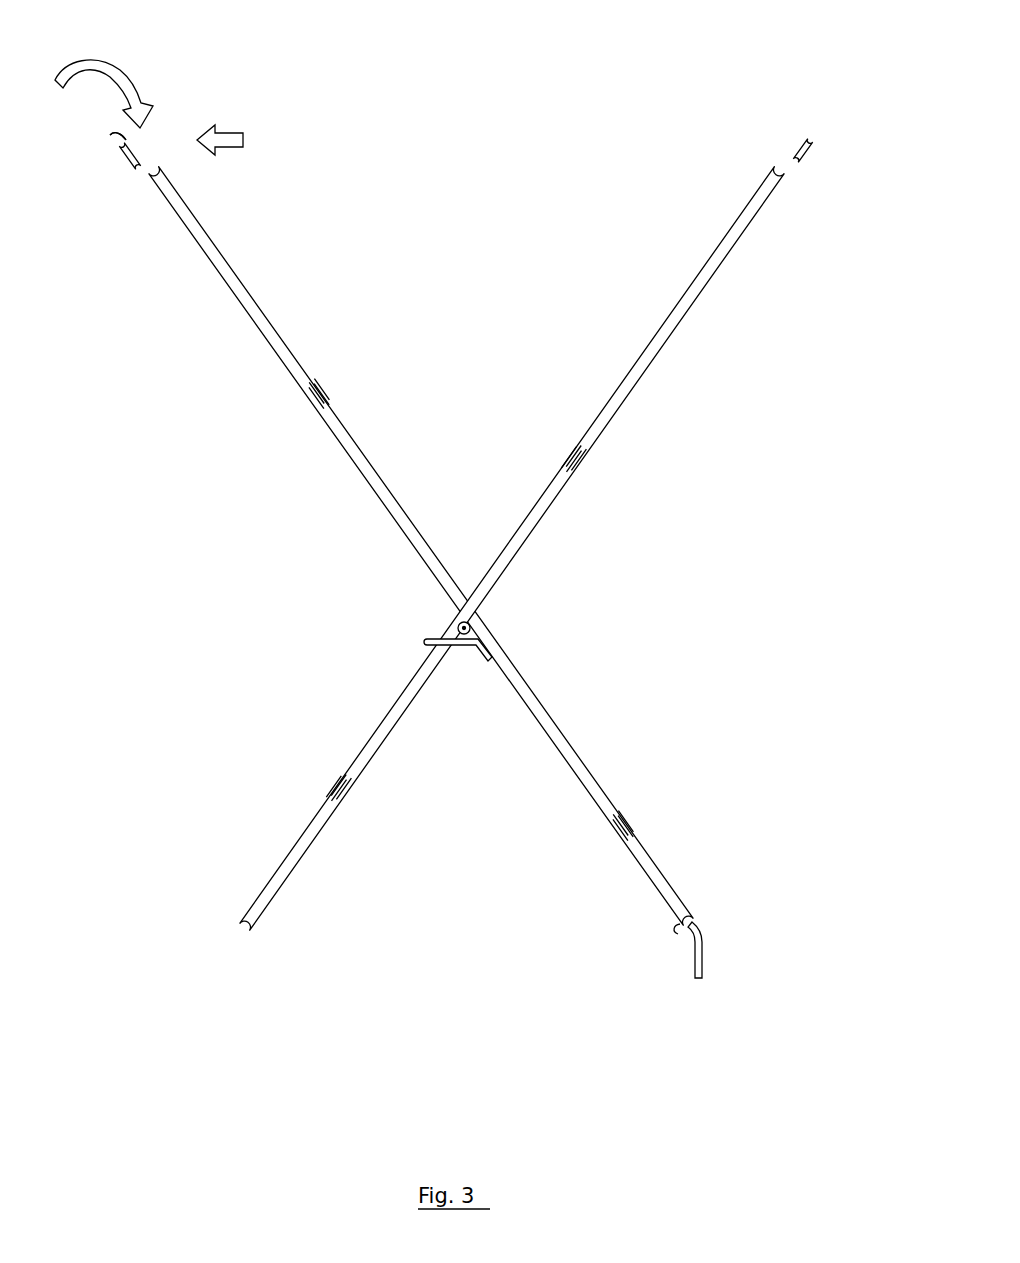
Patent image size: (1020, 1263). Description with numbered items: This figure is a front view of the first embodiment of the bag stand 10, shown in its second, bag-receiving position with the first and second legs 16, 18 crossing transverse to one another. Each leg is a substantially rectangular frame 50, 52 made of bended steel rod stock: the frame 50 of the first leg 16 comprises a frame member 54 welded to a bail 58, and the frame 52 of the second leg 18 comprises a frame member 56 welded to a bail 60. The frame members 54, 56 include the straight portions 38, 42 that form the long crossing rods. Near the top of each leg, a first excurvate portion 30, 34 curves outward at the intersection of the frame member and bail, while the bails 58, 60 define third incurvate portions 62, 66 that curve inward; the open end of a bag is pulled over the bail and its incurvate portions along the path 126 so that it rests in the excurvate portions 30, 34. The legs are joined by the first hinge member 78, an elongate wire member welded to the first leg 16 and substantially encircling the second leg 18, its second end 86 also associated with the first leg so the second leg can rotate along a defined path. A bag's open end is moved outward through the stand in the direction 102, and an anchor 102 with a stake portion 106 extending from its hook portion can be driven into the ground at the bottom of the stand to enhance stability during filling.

The bag stand 10 is at (847, 132).
The first leg 16 is at (243, 341).
The second leg 18 is at (672, 352).
The first excurvate portion 30 is at (145, 185).
The first excurvate portion 34 is at (783, 187).
The straight portion 38 is at (236, 287).
The straight portion 42 is at (690, 290).
The substantially rectangular frame 50 is at (158, 595).
The substantially rectangular frame 52 is at (798, 637).
The frame member 54 is at (597, 786).
The frame member 56 is at (298, 848).
The bail 58 is at (130, 157).
The bail 60 is at (801, 150).
The third incurvate portion 62 is at (112, 135).
The third incurvate portion 66 is at (810, 135).
The first hinge member 78 is at (464, 663).
The second end 86 is at (470, 625).
The direction 102 is at (240, 130).
The stake portion 106 is at (702, 957).
The path 126 is at (97, 62).